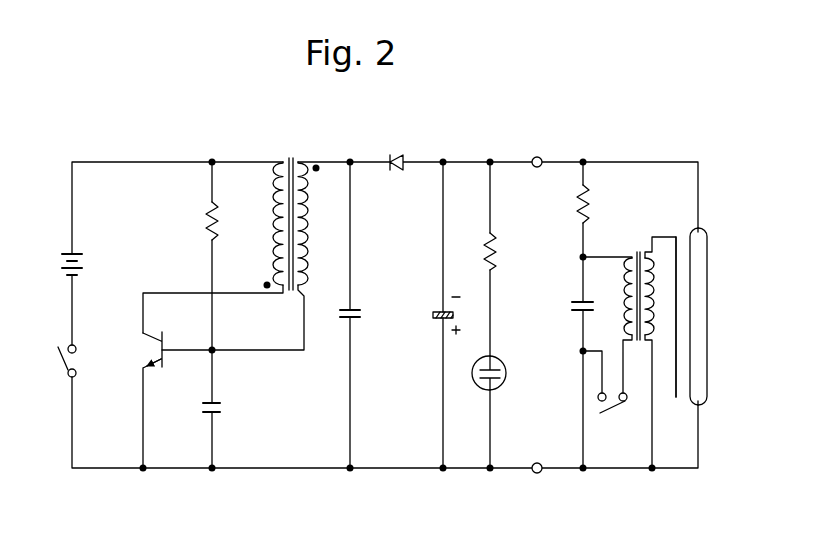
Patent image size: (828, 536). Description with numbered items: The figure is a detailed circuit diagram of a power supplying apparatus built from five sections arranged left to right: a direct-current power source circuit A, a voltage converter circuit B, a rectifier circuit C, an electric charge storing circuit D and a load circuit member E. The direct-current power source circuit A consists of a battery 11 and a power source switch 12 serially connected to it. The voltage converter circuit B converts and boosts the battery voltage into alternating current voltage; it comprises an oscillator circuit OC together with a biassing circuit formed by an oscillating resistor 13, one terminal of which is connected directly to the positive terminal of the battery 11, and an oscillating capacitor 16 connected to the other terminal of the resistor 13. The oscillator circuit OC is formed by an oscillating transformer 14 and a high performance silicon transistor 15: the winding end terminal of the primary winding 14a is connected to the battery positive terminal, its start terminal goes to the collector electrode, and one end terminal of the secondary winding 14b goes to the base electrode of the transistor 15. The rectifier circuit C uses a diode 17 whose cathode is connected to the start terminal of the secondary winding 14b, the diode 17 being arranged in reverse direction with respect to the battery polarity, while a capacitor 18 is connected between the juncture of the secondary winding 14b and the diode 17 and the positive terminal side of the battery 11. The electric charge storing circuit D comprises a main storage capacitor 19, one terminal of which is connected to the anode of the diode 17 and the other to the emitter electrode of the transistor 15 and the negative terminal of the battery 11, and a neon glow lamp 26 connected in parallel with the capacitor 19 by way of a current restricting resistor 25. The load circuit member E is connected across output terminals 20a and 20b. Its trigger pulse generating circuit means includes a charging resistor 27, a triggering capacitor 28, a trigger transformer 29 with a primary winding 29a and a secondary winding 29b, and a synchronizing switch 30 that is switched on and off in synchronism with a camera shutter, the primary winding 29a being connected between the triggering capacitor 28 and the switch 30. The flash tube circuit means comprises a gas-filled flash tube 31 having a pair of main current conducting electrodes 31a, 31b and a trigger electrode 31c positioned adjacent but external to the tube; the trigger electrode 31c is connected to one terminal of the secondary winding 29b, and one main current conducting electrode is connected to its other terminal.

The battery 11 is at (80, 261).
The power source switch 12 is at (66, 361).
The oscillating resistor 13 is at (206, 237).
The oscillating transformer 14 is at (288, 194).
The primary winding 14a is at (272, 220).
The secondary winding 14b is at (331, 236).
The high performance silicon transistor 15 is at (149, 350).
The oscillating capacitor 16 is at (218, 401).
The diode 17 is at (391, 156).
The capacitor 18 is at (360, 313).
The main storage capacitor 19 is at (432, 313).
The output terminal 20a is at (537, 156).
The output terminal 20b is at (538, 474).
The current restricting resistor 25 is at (495, 251).
The neon glow lamp 26 is at (506, 373).
The charging resistor 27 is at (577, 213).
The triggering capacitor 28 is at (567, 303).
The trigger transformer 29 is at (639, 323).
The primary winding 29a is at (624, 267).
The secondary winding 29b is at (659, 333).
The synchronizing switch 30 is at (612, 412).
The gas-filled flash tube 31 is at (710, 319).
The main current conducting electrode 31a is at (702, 405).
The main current conducting electrode 31b is at (705, 236).
The trigger electrode 31c is at (677, 333).
The direct-current power source circuit A is at (67, 306).
The voltage converter circuit B is at (250, 152).
The rectifier circuit C is at (413, 147).
The electric charge storing circuit D is at (463, 181).
The load circuit member E is at (663, 182).
The oscillator circuit OC is at (233, 167).